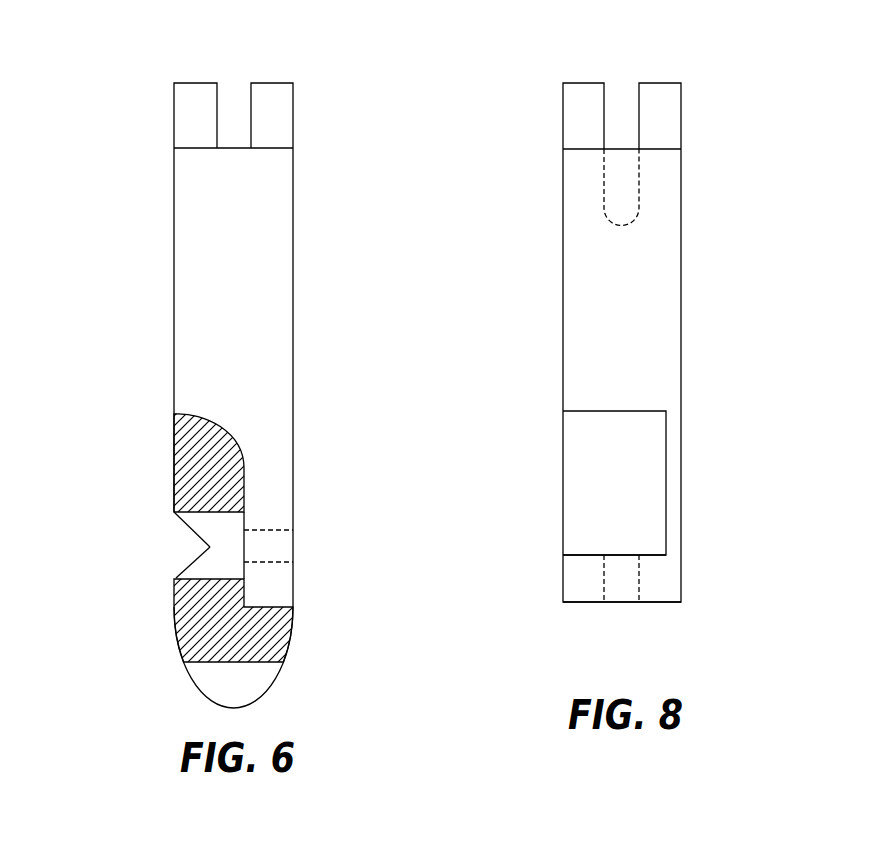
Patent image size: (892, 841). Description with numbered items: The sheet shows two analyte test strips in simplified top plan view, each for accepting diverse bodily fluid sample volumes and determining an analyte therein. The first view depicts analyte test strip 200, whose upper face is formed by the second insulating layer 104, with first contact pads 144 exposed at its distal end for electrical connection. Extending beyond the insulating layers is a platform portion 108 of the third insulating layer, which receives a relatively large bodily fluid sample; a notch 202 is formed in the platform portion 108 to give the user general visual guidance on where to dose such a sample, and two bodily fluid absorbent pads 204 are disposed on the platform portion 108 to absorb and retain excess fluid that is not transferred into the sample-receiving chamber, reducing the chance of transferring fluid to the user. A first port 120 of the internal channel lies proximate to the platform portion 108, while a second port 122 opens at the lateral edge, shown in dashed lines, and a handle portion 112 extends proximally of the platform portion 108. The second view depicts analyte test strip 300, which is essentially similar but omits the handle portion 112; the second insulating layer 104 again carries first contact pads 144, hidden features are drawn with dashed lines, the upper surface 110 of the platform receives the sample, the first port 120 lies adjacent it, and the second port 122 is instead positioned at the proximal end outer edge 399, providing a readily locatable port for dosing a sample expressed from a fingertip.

In FIG. 6, the analyte test strip 200 is at (231, 358).
In FIG. 8, the analyte test strip 300 is at (627, 335).
In FIG. 6, the second insulating layer 104 is at (263, 286).
In FIG. 8, the second insulating layer 104 is at (653, 286).
In FIG. 6, the first contact pads 144 is at (190, 117).
In FIG. 8, the first contact pads 144 is at (578, 117).
In FIG. 6, the bodily fluid absorbent pads 204 is at (176, 463).
In FIG. 6, the handle portion 112 is at (257, 682).
In FIG. 6, the platform portion 108 is at (161, 548).
In FIG. 6, the first port 120 is at (243, 548).
In FIG. 8, the first port 120 is at (623, 553).
In FIG. 6, the notch 202 is at (182, 563).
In FIG. 6, the second port 122 is at (294, 546).
In FIG. 8, the second port 122 is at (623, 603).
In FIG. 8, the upper surface 110 is at (618, 504).
In FIG. 8, the proximal end outer edge 399 is at (641, 624).